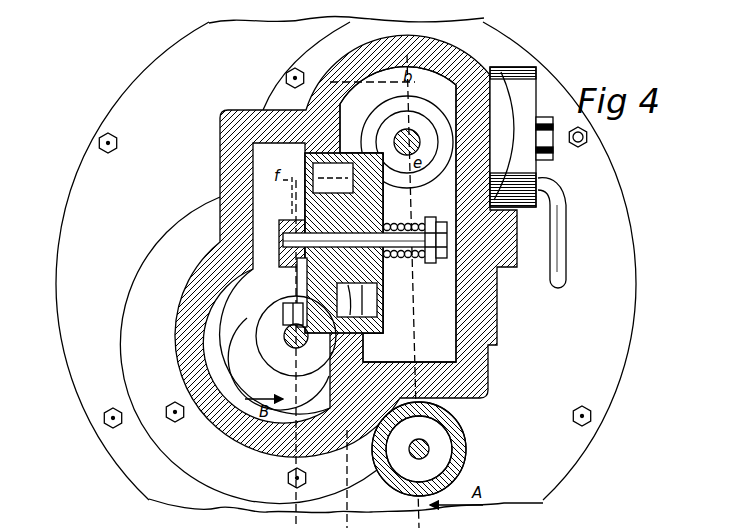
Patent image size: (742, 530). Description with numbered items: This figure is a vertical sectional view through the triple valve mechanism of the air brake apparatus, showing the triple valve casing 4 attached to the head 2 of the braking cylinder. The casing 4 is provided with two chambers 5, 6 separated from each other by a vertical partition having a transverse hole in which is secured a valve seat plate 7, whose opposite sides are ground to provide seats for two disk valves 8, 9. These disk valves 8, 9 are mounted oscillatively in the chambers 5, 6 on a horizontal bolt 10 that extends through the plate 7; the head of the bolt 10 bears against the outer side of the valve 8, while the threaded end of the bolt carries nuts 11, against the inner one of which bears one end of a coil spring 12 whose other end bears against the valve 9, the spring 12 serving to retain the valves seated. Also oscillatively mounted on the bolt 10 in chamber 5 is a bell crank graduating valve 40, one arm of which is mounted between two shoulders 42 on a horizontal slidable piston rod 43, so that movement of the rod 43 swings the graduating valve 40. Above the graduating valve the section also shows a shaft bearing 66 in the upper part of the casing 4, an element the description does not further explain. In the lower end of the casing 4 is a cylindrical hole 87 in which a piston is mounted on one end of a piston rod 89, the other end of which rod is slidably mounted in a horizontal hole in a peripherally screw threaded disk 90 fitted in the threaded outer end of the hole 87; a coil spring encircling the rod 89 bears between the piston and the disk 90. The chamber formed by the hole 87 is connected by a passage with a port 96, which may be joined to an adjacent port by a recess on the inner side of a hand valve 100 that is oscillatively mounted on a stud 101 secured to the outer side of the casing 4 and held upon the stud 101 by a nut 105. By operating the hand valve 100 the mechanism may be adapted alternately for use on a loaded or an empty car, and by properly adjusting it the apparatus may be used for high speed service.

The head 2 is at (346, 265).
The triple valve casing 4 is at (251, 108).
The chamber 5 is at (248, 350).
The chamber 6 is at (398, 214).
The valve seat plate 7 is at (367, 328).
The disk valve 8 is at (303, 199).
The disk valve 9 is at (363, 219).
The horizontal bolt 10 is at (279, 258).
The nuts 11 is at (430, 222).
The coil spring 12 is at (413, 218).
The bell crank graduating valve 40 is at (298, 274).
The shoulders 42 is at (283, 318).
The piston rod 43 is at (290, 341).
The shaft bearing 66 is at (411, 132).
The cylindrical hole 87 is at (466, 464).
The piston rod 89 is at (428, 452).
The peripherally screw threaded disk 90 is at (440, 434).
The port 96 is at (470, 67).
The hand valve 100 is at (540, 188).
The stud 101 is at (551, 136).
The nut 105 is at (554, 150).